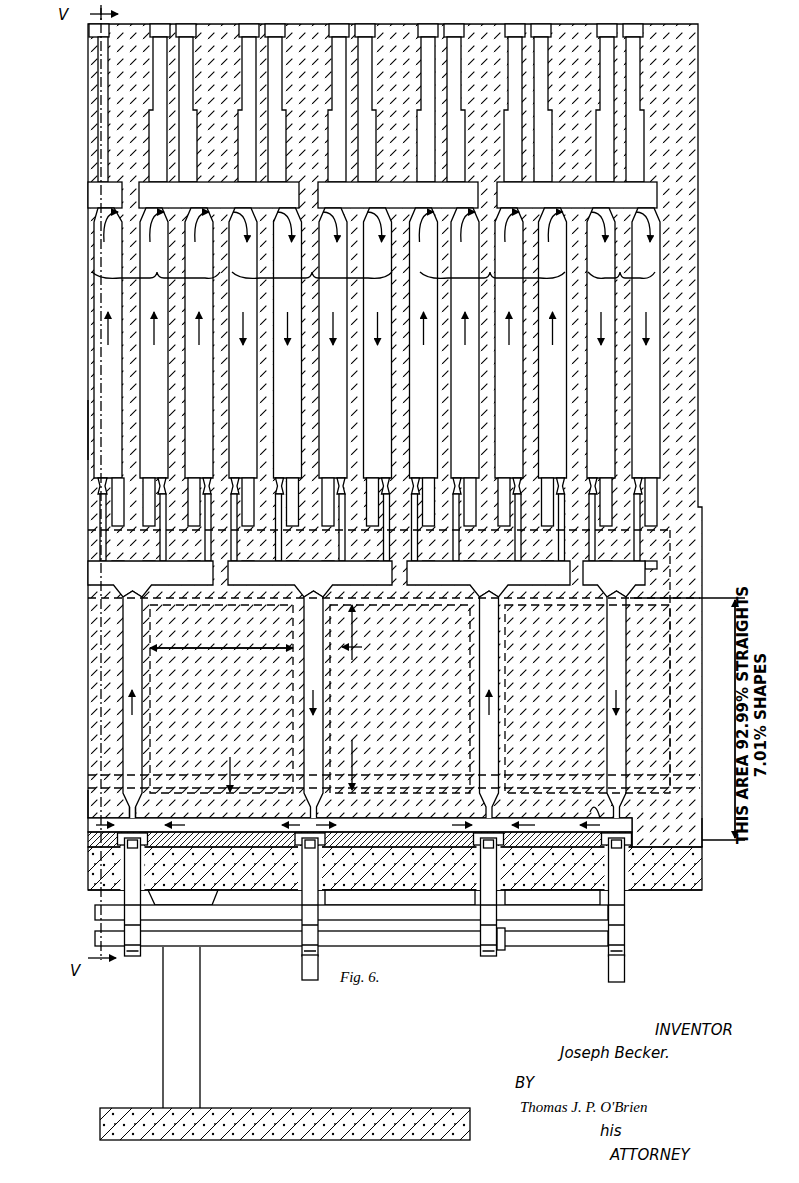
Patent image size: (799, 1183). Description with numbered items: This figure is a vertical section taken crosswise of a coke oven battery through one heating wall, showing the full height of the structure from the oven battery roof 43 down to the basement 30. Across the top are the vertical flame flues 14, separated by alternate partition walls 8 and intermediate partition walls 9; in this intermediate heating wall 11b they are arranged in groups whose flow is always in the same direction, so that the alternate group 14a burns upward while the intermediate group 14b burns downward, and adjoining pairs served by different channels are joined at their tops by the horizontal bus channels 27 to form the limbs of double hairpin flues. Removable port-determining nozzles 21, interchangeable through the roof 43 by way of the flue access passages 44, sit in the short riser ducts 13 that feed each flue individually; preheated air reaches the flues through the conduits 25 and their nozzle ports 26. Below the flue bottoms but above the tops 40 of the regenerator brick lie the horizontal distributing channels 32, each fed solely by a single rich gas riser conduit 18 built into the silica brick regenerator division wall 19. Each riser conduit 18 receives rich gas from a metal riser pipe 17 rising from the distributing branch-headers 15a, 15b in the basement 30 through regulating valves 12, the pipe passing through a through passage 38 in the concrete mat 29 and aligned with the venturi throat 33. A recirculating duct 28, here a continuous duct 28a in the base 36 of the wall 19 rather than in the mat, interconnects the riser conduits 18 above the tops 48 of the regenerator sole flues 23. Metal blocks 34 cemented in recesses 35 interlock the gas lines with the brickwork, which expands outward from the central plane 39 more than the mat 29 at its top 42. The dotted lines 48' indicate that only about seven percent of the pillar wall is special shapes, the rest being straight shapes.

The alternate partition wall 8 is at (136, 430).
The intermediate partition wall 9 is at (181, 430).
The intermediate heating wall 11b is at (88, 432).
The regulating valve 12 is at (366, 822).
The riser duct 13 is at (100, 528).
The flame flue 14 is at (660, 254).
The alternate flue group limb 14a is at (95, 360).
The intermediate flue group limb 14b is at (270, 360).
The distributing branch-header 15a is at (90, 938).
The distributing branch-header 15b is at (90, 913).
The metal riser pipe 17 is at (505, 899).
The rich gas riser conduit 18 is at (608, 673).
The regenerator division wall 19 is at (88, 668).
The port-determining nozzle 21 is at (160, 480).
The regenerator sole flue 23 is at (88, 800).
The air conduit 25 is at (88, 569).
The nozzle port 26 is at (100, 509).
The bus channel 27 is at (88, 190).
The recirculating duct 28 is at (230, 892).
The continuous recirculation duct 28a is at (72, 818).
The concrete mat 29 is at (702, 887).
The basement 30 is at (315, 1053).
The distributing channel 32 is at (436, 579).
The venturi throat 33 is at (360, 828).
The metal block 34 is at (88, 840).
The recess 35 is at (600, 818).
The base of silica wall 36 is at (702, 835).
The through passage 38 is at (655, 907).
The longitudinal vertical central plane 39 is at (205, 6).
The top of regenerator brick 40 is at (88, 598).
The top of concrete mat 42 is at (702, 865).
The oven battery roof 43 is at (497, 20).
The flue access passage 44 is at (190, 100).
The top of sole channel 48 is at (371, 659).
The dotted boundary line 48' is at (706, 660).